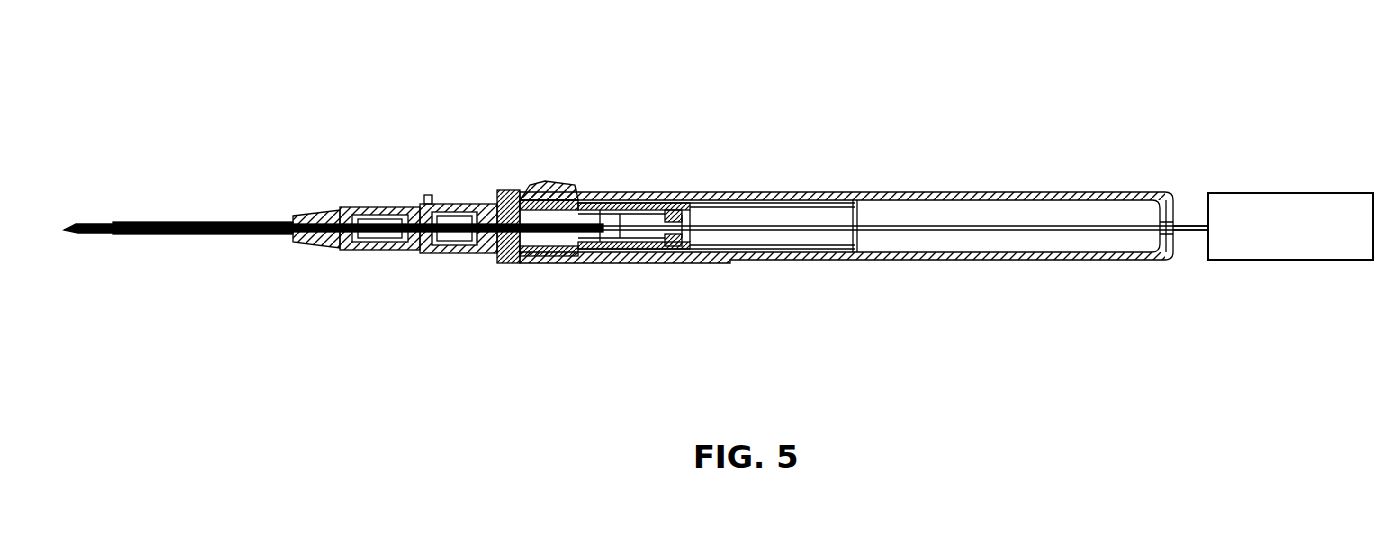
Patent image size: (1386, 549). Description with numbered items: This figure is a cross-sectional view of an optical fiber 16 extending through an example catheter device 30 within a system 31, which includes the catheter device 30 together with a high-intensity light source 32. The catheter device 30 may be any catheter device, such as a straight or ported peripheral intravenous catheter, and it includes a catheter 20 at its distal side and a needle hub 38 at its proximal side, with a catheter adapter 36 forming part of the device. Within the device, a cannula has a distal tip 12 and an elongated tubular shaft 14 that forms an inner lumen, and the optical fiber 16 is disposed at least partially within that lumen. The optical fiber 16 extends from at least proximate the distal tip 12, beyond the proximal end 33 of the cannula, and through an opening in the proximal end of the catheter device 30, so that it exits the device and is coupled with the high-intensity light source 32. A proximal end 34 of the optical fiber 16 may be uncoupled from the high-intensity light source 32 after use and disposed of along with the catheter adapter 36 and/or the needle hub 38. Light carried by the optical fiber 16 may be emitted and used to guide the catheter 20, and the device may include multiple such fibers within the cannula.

The distal tip 12 is at (67, 232).
The elongated tubular shaft 14 is at (588, 201).
The optical fiber 16 is at (100, 222).
The catheter 20 is at (237, 222).
The catheter device 30 is at (858, 146).
The system 31 is at (141, 82).
The high-intensity light source 32 is at (1320, 193).
The proximal end of the cannula 33 is at (622, 201).
The proximal end of the optical fiber 34 is at (1187, 222).
The catheter adapter 36 is at (497, 186).
The needle hub 38 is at (1174, 262).